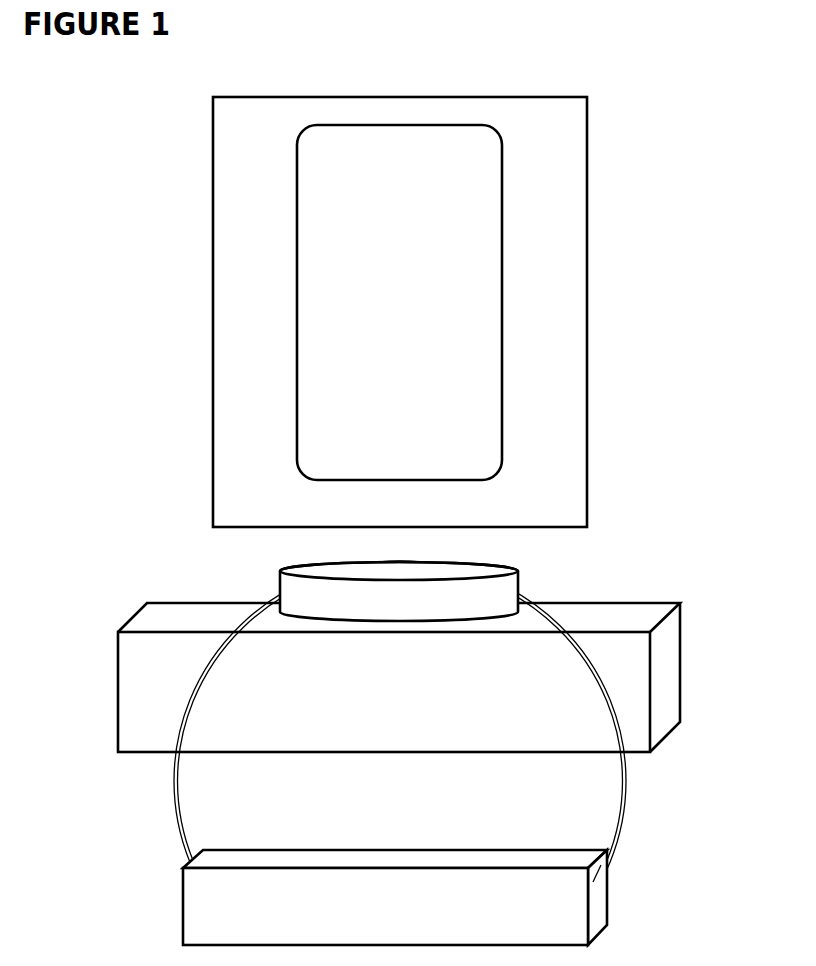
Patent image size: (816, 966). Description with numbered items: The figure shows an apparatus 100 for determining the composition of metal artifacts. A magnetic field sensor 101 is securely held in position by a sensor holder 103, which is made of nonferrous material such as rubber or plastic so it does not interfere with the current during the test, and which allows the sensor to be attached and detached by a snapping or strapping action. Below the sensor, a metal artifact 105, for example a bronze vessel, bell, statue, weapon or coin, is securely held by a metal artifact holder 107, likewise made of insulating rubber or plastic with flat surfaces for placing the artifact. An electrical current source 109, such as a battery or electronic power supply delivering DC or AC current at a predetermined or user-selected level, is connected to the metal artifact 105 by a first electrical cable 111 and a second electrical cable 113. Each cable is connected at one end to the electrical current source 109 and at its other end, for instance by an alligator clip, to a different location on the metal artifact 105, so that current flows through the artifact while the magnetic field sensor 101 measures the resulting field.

The apparatus 100 is at (143, 98).
The magnetic field sensor 101 is at (502, 223).
The sensor holder 103 is at (213, 428).
The metal artifact 105 is at (280, 587).
The metal artifact holder 107 is at (118, 673).
The electrical current source 109 is at (183, 912).
The first electrical cable 111 is at (173, 785).
The second electrical cable 113 is at (628, 790).